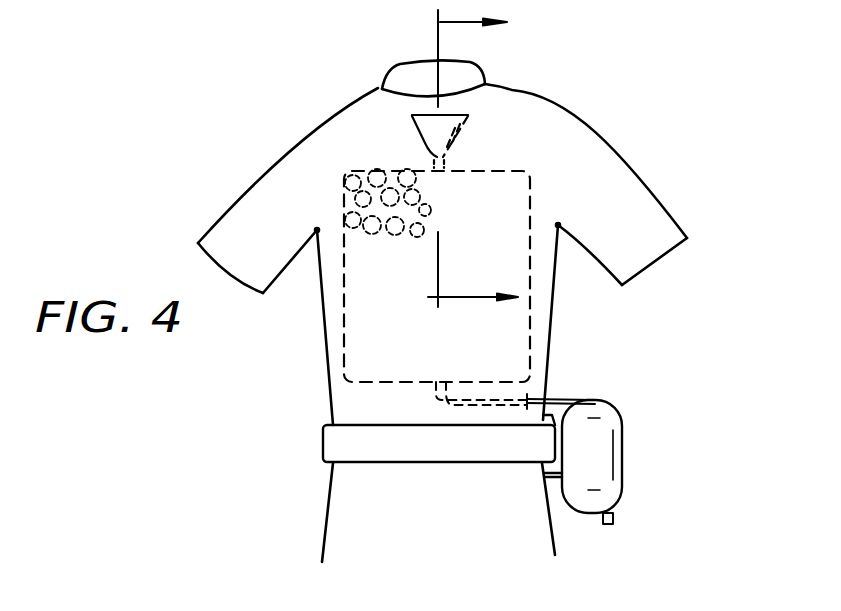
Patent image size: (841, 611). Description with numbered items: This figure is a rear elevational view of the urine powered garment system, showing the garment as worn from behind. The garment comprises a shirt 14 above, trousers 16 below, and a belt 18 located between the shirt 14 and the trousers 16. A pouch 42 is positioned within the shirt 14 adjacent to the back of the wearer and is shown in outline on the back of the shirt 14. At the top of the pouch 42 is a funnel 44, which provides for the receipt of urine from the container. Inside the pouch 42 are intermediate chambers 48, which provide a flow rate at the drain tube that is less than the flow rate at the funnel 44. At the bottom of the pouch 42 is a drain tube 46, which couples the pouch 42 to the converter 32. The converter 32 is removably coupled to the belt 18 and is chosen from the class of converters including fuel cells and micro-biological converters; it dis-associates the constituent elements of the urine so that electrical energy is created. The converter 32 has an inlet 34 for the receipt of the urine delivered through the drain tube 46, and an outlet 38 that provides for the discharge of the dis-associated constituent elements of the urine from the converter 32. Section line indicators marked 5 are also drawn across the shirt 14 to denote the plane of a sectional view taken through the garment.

The shirt 14 is at (322, 302).
The trousers 16 is at (340, 513).
The belt 18 is at (323, 438).
The converter 32 is at (623, 450).
The inlet 34 is at (563, 392).
The outlet 38 is at (618, 514).
The pouch 42 is at (463, 170).
The funnel 44 is at (460, 107).
The drain tube 46 is at (437, 398).
The intermediate chambers 48 is at (377, 173).
The section line 5 is at (464, 170).